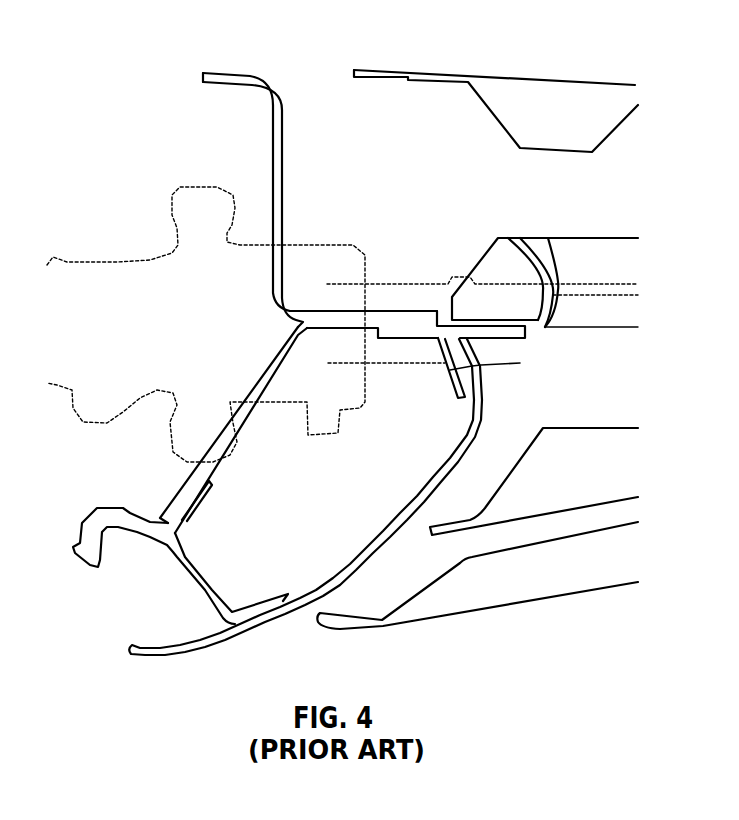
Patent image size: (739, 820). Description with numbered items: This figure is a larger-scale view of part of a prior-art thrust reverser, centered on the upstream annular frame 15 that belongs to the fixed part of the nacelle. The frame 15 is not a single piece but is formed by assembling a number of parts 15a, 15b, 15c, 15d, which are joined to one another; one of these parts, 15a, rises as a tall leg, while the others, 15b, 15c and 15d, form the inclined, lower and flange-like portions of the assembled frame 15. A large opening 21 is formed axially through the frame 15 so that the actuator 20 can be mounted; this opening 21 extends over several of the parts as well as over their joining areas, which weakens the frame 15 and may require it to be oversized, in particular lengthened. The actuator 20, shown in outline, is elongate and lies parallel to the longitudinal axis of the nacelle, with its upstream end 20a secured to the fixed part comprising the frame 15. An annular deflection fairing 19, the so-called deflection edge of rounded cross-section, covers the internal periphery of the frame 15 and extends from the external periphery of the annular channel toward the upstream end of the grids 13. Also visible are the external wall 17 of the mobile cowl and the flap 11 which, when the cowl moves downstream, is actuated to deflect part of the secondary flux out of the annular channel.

The flap 11 is at (522, 597).
The grids 13 is at (601, 256).
The upstream annular frame 15 is at (277, 84).
The frame part 15a is at (279, 180).
The frame part 15b is at (180, 557).
The frame part 15c is at (247, 402).
The frame part 15d is at (495, 333).
The external wall 17 is at (567, 95).
The annular deflection fairing 19 is at (182, 646).
The actuator 20 is at (412, 363).
The upstream end of the actuator 20a is at (71, 386).
The opening 21 is at (291, 266).